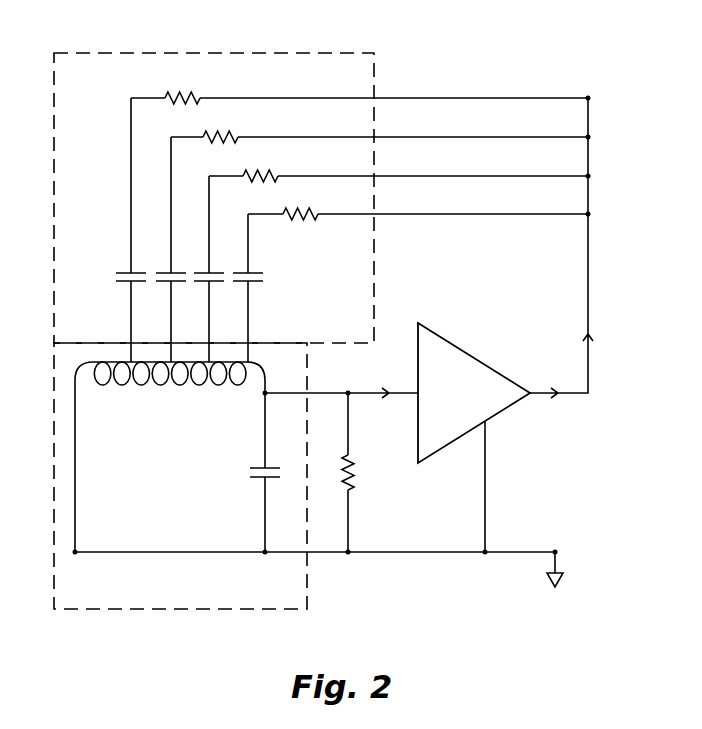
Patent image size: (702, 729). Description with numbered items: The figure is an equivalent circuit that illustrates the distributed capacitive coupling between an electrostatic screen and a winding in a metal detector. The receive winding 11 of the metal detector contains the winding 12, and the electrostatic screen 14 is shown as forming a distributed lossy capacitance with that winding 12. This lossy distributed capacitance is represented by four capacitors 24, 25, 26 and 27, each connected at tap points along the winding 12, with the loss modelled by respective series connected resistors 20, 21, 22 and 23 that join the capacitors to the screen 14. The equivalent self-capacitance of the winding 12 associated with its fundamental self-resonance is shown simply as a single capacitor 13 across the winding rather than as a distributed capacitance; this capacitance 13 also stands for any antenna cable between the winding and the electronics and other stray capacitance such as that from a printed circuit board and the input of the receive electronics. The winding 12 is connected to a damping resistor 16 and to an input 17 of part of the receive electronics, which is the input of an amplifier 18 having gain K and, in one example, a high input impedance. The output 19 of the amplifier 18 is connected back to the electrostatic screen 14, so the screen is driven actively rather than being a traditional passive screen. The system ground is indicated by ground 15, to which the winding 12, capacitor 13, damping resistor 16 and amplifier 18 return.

The receive winding 11 is at (136, 610).
The winding 12 is at (178, 385).
The capacitor 13 is at (252, 467).
The electrostatic screen 14 is at (374, 83).
The system ground 15 is at (563, 580).
The damping resistor 16 is at (355, 470).
The input 17 is at (325, 392).
The amplifier 18 is at (478, 355).
The output 19 is at (589, 362).
The resistor 20 is at (310, 210).
The resistor 21 is at (271, 172).
The resistor 22 is at (231, 133).
The resistor 23 is at (193, 94).
The capacitor 24 is at (252, 283).
The capacitor 25 is at (213, 283).
The capacitor 26 is at (166, 272).
The capacitor 27 is at (124, 272).